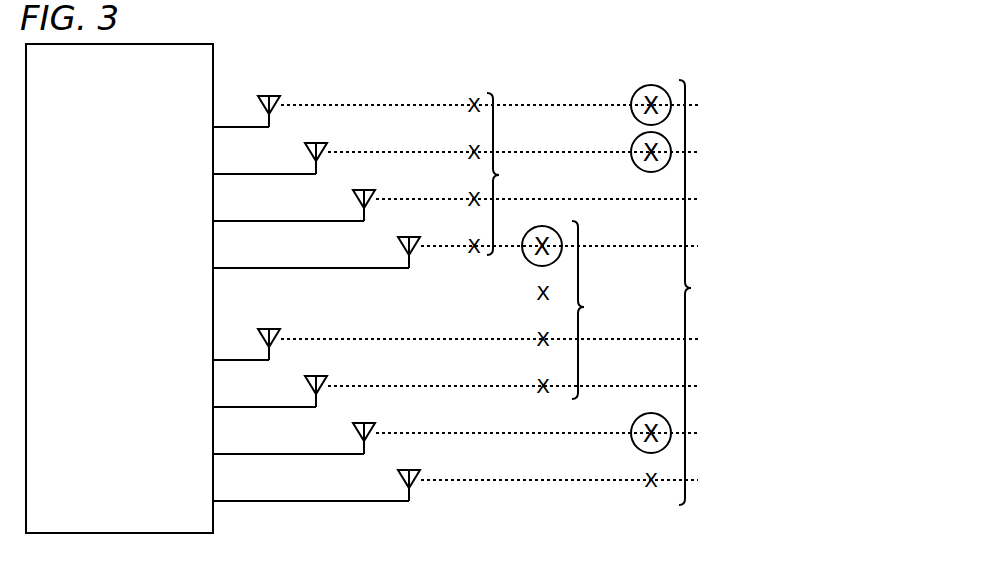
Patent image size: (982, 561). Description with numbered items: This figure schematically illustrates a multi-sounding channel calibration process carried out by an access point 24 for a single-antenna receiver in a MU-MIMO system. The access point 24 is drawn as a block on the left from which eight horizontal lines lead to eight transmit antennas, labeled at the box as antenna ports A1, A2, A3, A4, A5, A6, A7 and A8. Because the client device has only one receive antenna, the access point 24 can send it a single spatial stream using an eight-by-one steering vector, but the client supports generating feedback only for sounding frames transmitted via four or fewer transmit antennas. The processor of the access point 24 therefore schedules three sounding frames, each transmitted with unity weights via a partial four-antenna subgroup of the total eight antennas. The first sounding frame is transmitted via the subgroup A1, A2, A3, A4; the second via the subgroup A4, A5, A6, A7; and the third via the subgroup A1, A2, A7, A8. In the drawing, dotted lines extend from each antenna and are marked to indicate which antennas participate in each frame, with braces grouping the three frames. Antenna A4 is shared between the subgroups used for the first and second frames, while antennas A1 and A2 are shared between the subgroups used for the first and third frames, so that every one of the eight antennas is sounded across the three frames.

The access point 24 is at (73, 330).
The antenna A1 is at (223, 128).
The antenna A2 is at (246, 175).
The antenna A3 is at (270, 222).
The antenna A4 is at (293, 269).
The antenna A5 is at (223, 361).
The antenna A6 is at (246, 408).
The antenna A7 is at (270, 455).
The antenna A8 is at (293, 502).